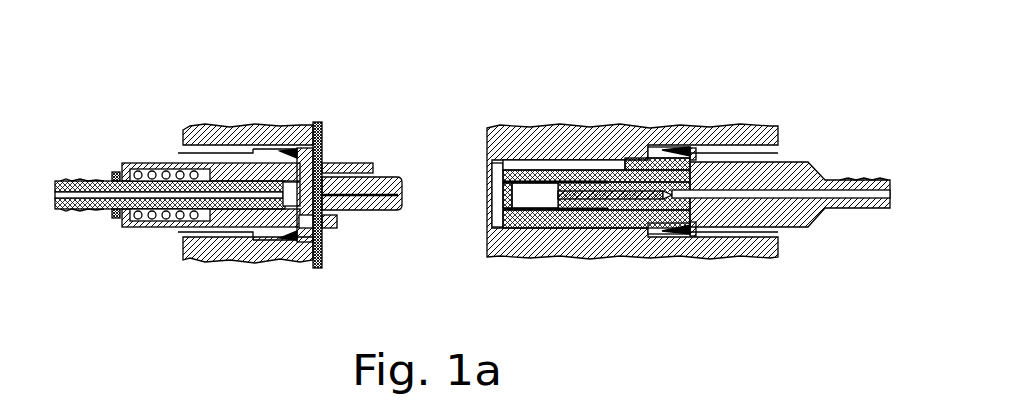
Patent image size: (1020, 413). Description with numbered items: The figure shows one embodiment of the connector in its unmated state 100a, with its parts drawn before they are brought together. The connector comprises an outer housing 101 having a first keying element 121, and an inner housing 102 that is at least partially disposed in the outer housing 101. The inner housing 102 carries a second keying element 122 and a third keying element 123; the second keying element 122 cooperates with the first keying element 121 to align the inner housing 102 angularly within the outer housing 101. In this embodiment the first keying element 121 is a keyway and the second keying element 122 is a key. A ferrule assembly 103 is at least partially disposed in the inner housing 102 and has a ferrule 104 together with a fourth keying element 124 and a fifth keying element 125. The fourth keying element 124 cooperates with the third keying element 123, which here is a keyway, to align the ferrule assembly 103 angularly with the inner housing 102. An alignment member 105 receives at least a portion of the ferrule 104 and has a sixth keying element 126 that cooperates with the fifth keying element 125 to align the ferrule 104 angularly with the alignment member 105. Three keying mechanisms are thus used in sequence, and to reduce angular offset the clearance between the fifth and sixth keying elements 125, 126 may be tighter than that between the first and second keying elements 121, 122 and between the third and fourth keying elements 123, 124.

The connector in unmated state 100a is at (505, 42).
The outer housing 101 is at (258, 126).
The inner housing 102 is at (140, 163).
The ferrule assembly 103 is at (107, 205).
The ferrule 104 is at (324, 230).
The alignment member 105 is at (605, 224).
The first keying element 121 is at (207, 153).
The second keying element 122 is at (296, 150).
The third keying element 123 is at (299, 149).
The fourth keying element 124 is at (342, 163).
The fifth keying element 125 is at (372, 166).
The sixth keying element 126 is at (583, 167).